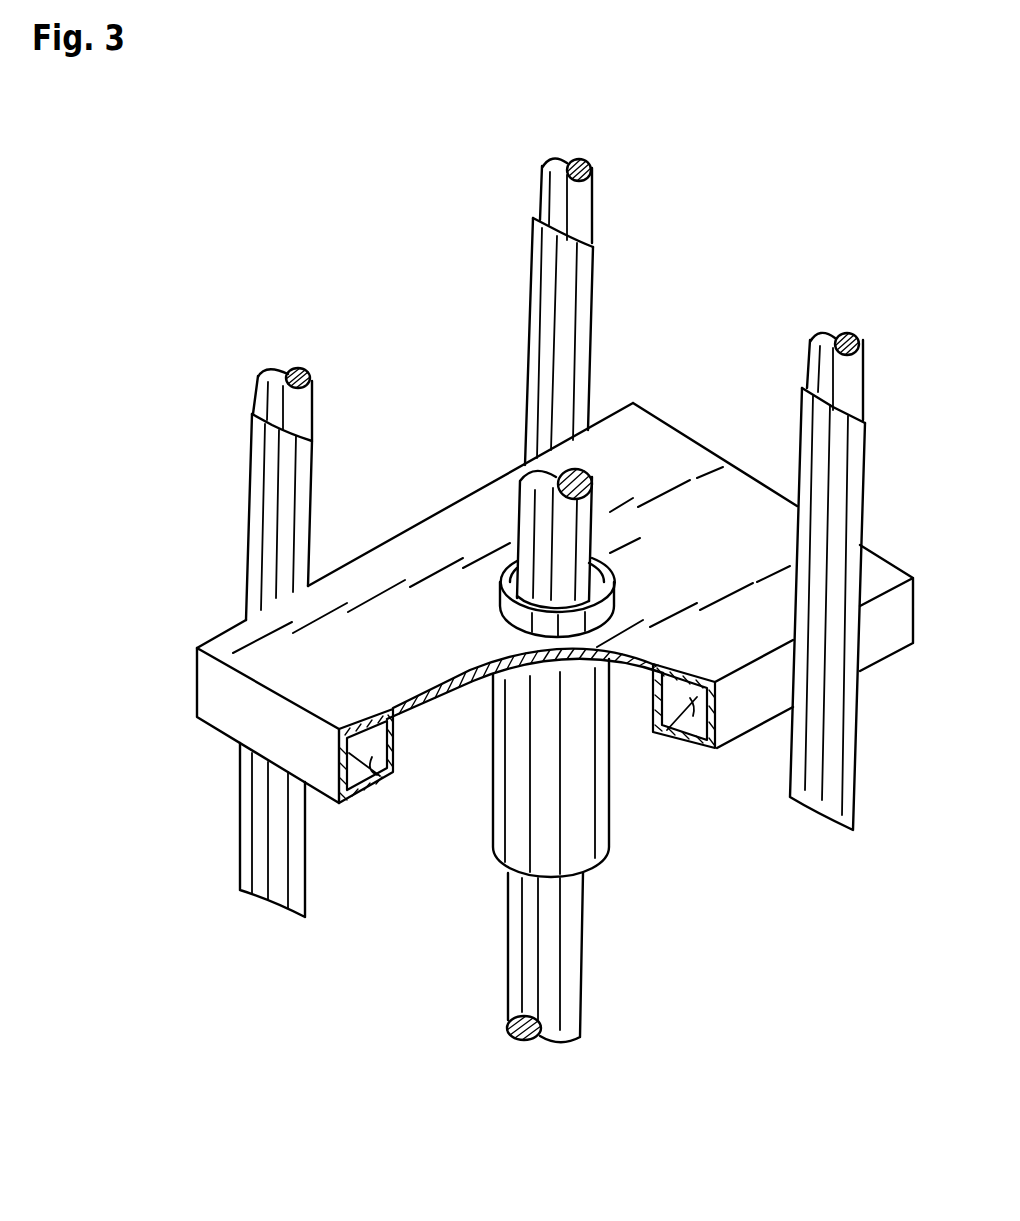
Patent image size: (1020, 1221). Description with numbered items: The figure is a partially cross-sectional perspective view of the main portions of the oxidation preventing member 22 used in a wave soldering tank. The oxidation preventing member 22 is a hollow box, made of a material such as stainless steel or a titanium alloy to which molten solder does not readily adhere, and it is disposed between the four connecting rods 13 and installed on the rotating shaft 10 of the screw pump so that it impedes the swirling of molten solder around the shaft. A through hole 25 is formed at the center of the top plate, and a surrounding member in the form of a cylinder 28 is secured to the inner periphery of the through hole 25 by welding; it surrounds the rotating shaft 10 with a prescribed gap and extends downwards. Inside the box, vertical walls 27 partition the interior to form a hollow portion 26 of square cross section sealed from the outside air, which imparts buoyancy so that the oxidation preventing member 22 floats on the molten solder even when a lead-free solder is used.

The rotating shaft 10 is at (583, 1012).
The connecting rods 13 is at (858, 466).
The oxidation preventing member 22 is at (696, 444).
The through hole 25 is at (499, 612).
The hollow portion 26 is at (690, 740).
The vertical walls 27 is at (658, 699).
The cylinder 28 is at (613, 572).